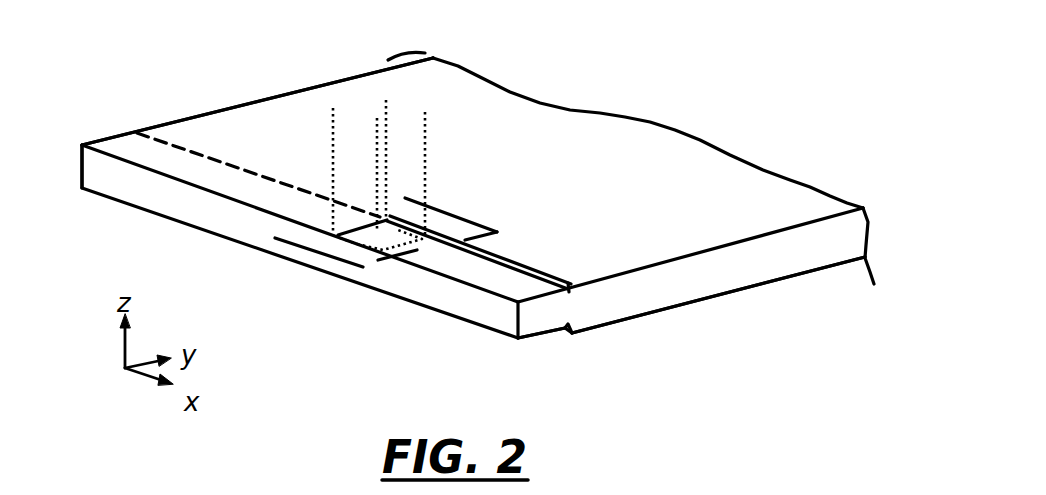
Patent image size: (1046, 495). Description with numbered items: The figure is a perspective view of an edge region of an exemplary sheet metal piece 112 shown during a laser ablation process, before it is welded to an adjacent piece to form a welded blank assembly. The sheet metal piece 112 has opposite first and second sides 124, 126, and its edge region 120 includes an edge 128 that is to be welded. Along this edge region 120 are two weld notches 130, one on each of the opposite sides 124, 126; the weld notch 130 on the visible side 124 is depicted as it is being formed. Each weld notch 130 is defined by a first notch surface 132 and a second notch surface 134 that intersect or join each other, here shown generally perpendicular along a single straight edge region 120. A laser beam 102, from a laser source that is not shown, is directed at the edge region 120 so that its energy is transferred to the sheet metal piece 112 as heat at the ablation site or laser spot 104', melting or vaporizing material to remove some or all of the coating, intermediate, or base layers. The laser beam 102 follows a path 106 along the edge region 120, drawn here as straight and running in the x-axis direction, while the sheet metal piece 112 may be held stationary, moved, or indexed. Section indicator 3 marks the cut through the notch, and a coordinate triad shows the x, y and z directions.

The sheet metal piece 112 is at (478, 172).
The laser beam 102 is at (333, 143).
The cavity 104' is at (361, 288).
The path 106 is at (180, 151).
The edge region 120 is at (592, 348).
The first side 124 is at (452, 92).
The second side 126 is at (685, 300).
The edge 128 is at (98, 170).
The weld notch 130 is at (545, 285).
The first notch surface 132 is at (511, 262).
The second notch surface 134 is at (528, 288).
The section line 3- 3 is at (360, 212).